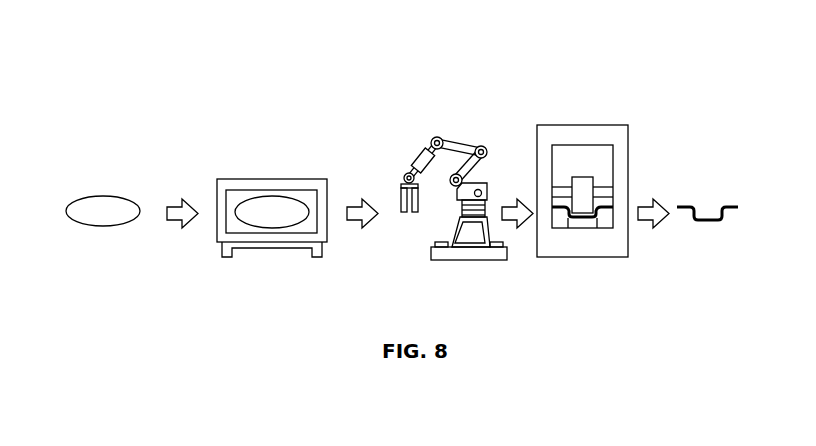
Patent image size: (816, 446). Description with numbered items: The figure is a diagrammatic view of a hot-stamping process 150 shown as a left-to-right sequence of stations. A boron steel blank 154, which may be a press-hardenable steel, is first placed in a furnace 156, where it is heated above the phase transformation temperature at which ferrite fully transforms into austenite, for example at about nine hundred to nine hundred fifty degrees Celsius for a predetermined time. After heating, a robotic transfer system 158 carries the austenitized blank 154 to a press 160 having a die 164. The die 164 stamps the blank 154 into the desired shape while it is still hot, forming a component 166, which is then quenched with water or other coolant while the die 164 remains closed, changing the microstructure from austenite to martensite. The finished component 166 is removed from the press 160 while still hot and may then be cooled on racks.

The hot-stamping process 150 is at (648, 37).
The boron steel blank 154 is at (103, 196).
The furnace 156 is at (272, 242).
The robotic transfer system 158 is at (457, 140).
The press 160 is at (583, 125).
The die 164 is at (608, 198).
The component 166 is at (705, 206).